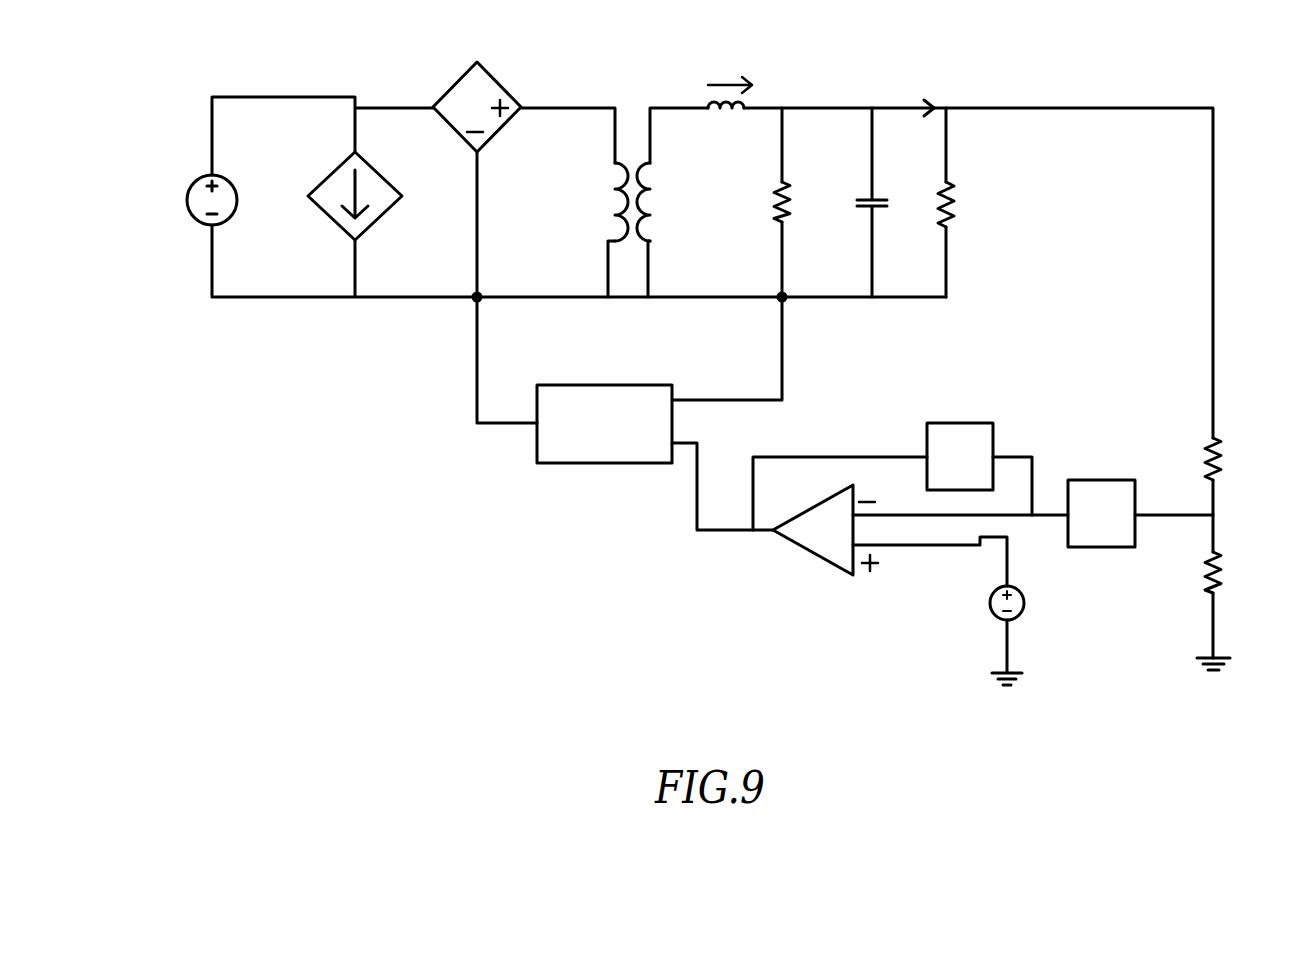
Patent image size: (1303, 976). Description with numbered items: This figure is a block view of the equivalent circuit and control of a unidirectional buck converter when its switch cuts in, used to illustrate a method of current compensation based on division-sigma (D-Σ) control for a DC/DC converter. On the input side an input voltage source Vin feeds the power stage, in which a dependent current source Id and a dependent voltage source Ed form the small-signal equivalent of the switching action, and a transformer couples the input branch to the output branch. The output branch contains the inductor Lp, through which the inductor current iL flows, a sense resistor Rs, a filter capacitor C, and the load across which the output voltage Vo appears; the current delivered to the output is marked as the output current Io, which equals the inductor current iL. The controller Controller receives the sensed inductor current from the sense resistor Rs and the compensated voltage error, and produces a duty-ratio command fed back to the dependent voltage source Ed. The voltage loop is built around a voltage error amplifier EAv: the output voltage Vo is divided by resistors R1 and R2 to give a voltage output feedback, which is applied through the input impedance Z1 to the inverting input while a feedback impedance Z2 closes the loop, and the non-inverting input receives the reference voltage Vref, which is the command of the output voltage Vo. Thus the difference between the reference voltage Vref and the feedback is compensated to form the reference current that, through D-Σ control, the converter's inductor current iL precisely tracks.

The input voltage source Vin is at (166, 182).
The dependent current source Id is at (355, 196).
The dependent voltage source Ed is at (488, 20).
The inductor Lp is at (726, 119).
The inductor current iL is at (730, 64).
The sense resistor Rs is at (731, 254).
The output capacitor C is at (872, 202).
The output voltage Vo is at (963, 157).
The output current Io is at (918, 79).
The controller Controller is at (635, 457).
The voltage error amplifier EAv is at (910, 521).
The feedback impedance Z2 is at (979, 469).
The input impedance Z1 is at (1140, 513).
The reference voltage Vref is at (1041, 633).
The divider resistor R1 is at (1244, 466).
The divider resistor R2 is at (1239, 607).